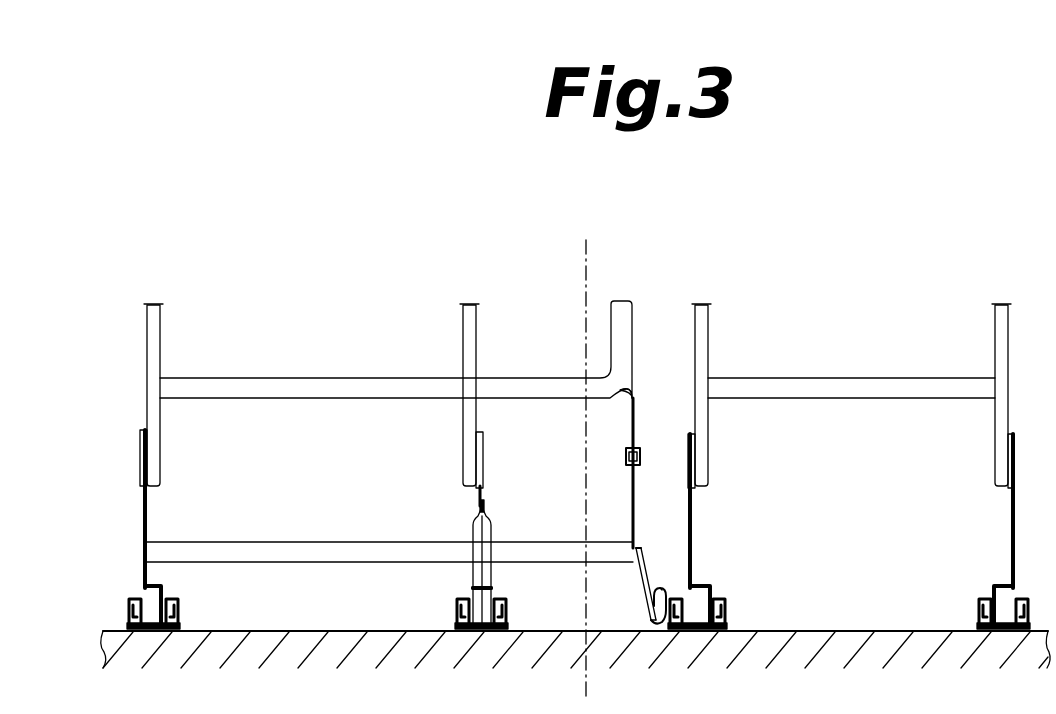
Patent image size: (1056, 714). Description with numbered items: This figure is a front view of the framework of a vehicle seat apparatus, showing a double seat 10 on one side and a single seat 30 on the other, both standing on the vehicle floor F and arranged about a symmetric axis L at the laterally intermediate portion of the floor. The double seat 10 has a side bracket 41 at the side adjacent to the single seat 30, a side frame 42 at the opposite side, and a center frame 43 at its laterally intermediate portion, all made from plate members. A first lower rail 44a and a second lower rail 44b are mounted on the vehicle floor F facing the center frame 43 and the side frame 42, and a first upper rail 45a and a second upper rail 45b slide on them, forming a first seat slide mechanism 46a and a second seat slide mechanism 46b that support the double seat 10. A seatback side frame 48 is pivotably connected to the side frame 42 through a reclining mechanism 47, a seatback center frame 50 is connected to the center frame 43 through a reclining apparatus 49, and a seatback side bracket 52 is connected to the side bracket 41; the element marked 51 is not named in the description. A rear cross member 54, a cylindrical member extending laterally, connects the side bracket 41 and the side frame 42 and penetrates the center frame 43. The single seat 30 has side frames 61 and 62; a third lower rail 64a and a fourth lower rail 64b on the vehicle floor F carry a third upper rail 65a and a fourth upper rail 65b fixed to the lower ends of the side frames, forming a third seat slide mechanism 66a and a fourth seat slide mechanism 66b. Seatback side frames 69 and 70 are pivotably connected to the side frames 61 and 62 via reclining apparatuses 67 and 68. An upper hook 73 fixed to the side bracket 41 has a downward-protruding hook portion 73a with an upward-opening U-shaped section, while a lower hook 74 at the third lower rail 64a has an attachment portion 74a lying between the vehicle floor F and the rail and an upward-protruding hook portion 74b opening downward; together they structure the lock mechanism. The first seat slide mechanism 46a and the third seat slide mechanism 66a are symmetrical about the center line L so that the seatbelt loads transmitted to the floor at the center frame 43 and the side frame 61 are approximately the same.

The double seat 10 is at (396, 269).
The single seat 30 is at (849, 269).
The symmetric axis L is at (592, 257).
The vehicle floor F is at (278, 630).
The side bracket 41 is at (632, 535).
The side frame 42 is at (143, 490).
The center frame 43 is at (472, 532).
The first lower rail 44a is at (457, 616).
The second lower rail 44b is at (130, 616).
The first upper rail 45a is at (472, 590).
The second upper rail 45b is at (142, 590).
The first seat slide mechanism 46a is at (396, 570).
The second seat slide mechanism 46b is at (84, 568).
The reclining mechanism 47 is at (143, 432).
The seatback side frame 48 is at (161, 340).
The reclining apparatus 49 is at (481, 432).
The seatback center frame 50 is at (477, 342).
The fastener 51 is at (640, 458).
The seatback side bracket 52 is at (634, 414).
The rear cross member 54 is at (282, 540).
The side frame 61 is at (693, 530).
The side frame 62 is at (1013, 530).
The third lower rail 64a is at (726, 612).
The fourth lower rail 64b is at (976, 614).
The third upper rail 65a is at (715, 590).
The fourth upper rail 65b is at (977, 590).
The third seat slide mechanism 66a is at (786, 566).
The fourth seat slide mechanism 66b is at (918, 566).
The reclining apparatus 67 is at (690, 433).
The reclining apparatus 68 is at (1012, 434).
The seatback side frame 69 is at (709, 342).
The seatback side frame 70 is at (994, 342).
The upper hook 73 is at (650, 618).
The hook portion 73a is at (655, 634).
The lower hook 74 is at (663, 590).
The attachment portion 74a is at (700, 634).
The hook portion 74b is at (640, 588).